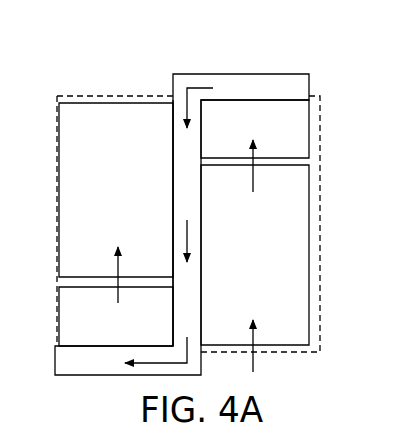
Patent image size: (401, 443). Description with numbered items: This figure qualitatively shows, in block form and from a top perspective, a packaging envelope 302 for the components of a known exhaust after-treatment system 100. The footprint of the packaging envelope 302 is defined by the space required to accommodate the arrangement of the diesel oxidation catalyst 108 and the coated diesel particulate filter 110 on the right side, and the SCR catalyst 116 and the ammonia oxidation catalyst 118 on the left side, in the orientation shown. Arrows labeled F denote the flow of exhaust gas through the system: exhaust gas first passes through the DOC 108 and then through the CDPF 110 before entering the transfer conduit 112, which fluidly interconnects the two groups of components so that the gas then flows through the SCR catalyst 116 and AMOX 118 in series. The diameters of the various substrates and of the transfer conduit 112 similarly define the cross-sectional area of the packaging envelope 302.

The exhaust after-treatment system 100 is at (257, 61).
The transfer conduit 112 is at (185, 203).
The ammonia oxidation catalyst 118 is at (133, 181).
The SCR catalyst 116 is at (135, 334).
The coated diesel particulate filter 110 is at (273, 134).
The diesel oxidation catalyst 108 is at (278, 235).
The packaging envelope 302 is at (321, 330).